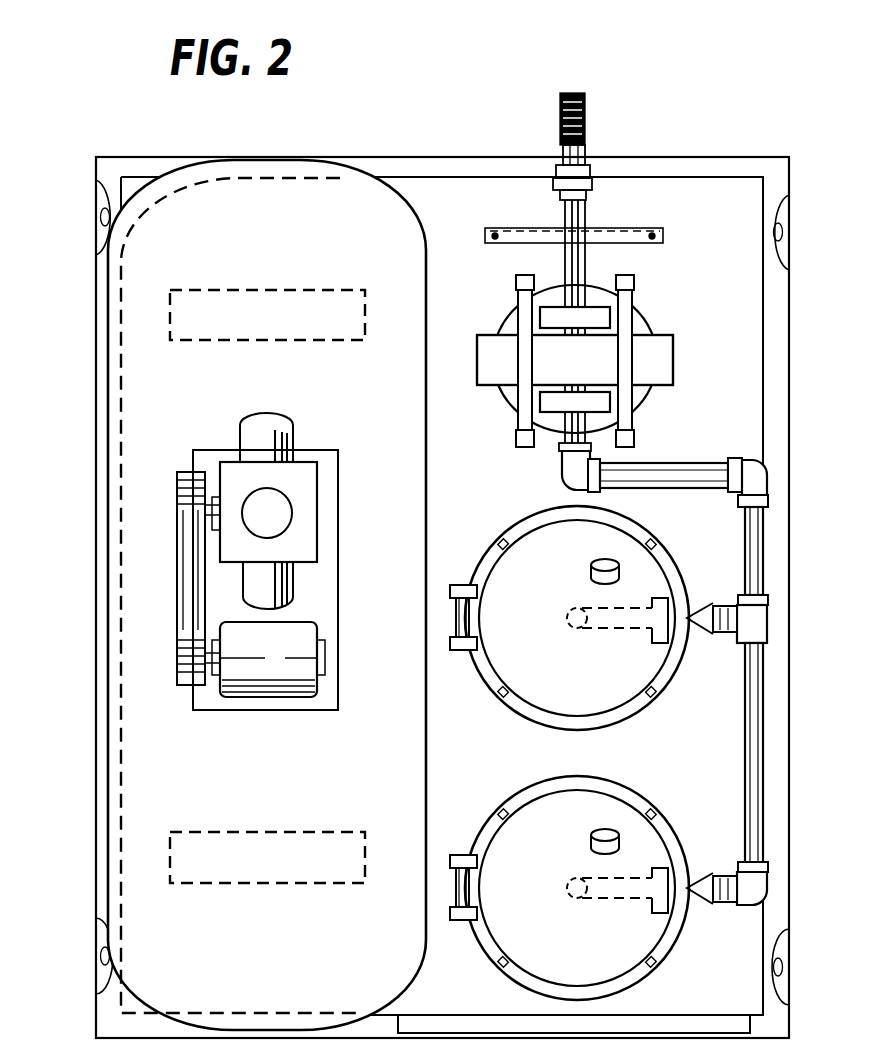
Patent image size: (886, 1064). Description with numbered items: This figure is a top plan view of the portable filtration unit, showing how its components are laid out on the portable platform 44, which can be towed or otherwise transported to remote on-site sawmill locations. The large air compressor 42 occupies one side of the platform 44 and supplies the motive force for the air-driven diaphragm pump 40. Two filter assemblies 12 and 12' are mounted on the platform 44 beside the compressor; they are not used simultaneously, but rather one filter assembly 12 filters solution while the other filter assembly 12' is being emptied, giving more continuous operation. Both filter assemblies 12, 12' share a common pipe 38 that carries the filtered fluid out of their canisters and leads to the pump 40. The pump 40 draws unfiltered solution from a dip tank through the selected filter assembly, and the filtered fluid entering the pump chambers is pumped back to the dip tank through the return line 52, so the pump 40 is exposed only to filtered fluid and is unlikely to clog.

The filter assembly 12 is at (649, 888).
The filter assembly 12' is at (659, 618).
The pipe 38 is at (666, 458).
The pump 40 is at (648, 298).
The air compressor 42 is at (107, 370).
The portable platform 44 is at (790, 158).
The return line 52 is at (576, 90).